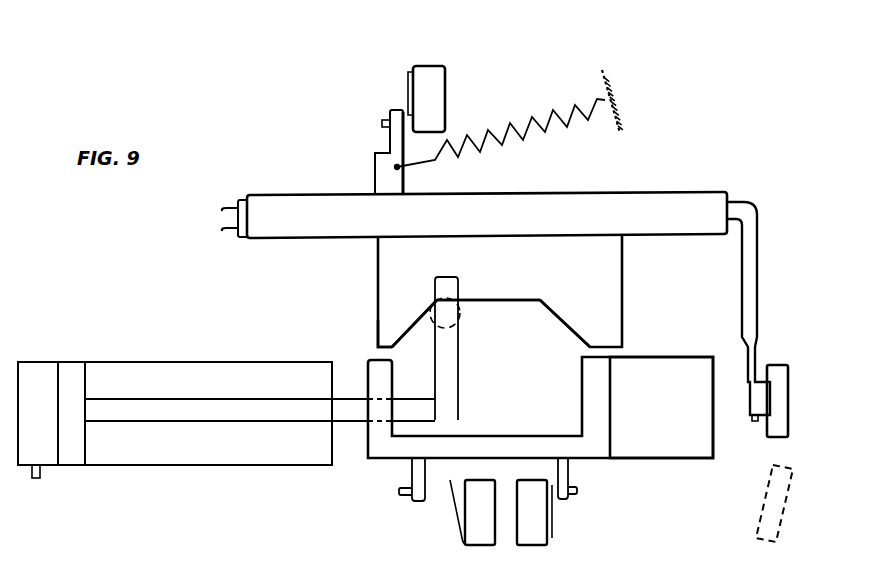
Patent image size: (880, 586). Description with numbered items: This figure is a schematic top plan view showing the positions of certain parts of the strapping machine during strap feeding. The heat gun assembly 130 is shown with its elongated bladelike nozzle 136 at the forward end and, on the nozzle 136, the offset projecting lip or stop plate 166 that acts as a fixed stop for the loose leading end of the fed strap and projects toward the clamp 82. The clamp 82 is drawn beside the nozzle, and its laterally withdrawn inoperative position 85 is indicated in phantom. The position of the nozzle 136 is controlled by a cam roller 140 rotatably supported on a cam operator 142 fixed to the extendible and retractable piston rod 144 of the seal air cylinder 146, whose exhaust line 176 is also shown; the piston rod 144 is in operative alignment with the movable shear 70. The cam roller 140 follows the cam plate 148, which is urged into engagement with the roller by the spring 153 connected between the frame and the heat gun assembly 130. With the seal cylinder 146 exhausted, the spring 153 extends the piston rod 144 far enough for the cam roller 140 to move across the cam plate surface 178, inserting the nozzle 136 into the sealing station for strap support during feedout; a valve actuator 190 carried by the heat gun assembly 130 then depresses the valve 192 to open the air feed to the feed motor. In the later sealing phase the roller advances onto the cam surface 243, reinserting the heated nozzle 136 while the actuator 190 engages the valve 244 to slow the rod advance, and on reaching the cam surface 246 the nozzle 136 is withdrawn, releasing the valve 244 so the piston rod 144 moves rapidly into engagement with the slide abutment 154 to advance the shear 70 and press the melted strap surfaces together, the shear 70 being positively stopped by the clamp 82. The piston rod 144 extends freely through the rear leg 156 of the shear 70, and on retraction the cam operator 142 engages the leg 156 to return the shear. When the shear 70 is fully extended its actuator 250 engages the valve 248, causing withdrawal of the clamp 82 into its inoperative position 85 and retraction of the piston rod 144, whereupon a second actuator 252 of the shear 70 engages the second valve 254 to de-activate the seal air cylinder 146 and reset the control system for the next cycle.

The heat gun assembly 130 is at (640, 187).
The valve actuator 190 is at (387, 121).
The valve 192 is at (458, 80).
The valve 244 is at (432, 78).
The spring 153 is at (553, 109).
The cam plate 148 is at (552, 279).
The rear leg 156 is at (380, 377).
The cam plate surface 178 is at (415, 330).
The cam surface 243 is at (520, 303).
The cam surface 246 is at (565, 327).
The cam operator 142 is at (452, 358).
The cam roller 140 is at (460, 313).
The seal air cylinder 146 is at (115, 363).
The piston rod 144 is at (415, 402).
The air line 176 is at (35, 478).
The slide abutment 154 is at (582, 392).
The movable shear 70 is at (647, 353).
The actuator 250 is at (430, 499).
The actuator 252 is at (572, 494).
The valve 248 is at (480, 541).
The second valve 254 is at (533, 539).
The stop plate 166 is at (760, 388).
The nozzle 136 is at (752, 421).
The clamp 82 is at (789, 397).
The inoperative position 85 is at (765, 498).